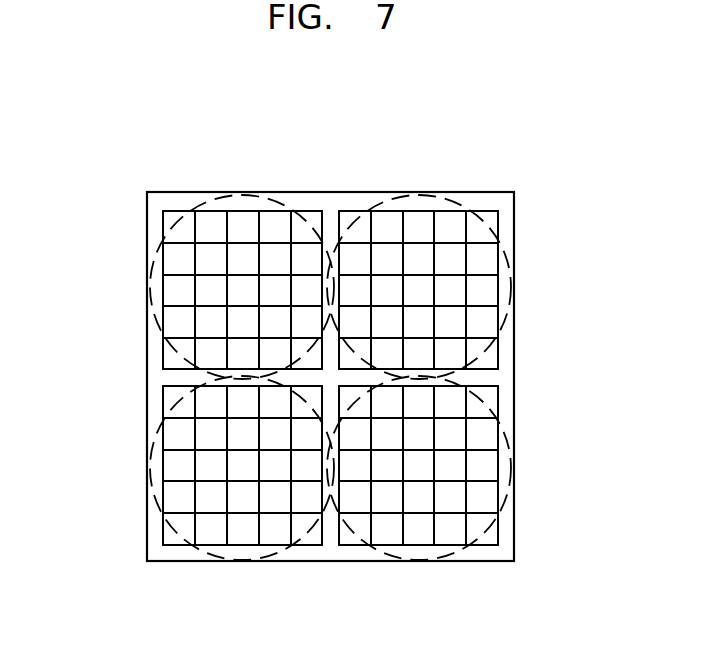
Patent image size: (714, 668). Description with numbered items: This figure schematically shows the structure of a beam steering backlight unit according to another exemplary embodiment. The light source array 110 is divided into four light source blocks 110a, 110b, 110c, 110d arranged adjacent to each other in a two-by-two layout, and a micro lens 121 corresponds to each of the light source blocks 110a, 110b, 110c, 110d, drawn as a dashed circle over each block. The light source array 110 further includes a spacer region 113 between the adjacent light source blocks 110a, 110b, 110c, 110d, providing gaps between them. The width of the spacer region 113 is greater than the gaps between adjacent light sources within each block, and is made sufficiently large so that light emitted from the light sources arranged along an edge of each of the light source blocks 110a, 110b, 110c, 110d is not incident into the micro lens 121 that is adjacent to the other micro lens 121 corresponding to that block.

The light source array 110 is at (334, 178).
The light source block 110a is at (166, 228).
The light source block 110b is at (492, 228).
The light source block 110c is at (494, 532).
The light source block 110d is at (166, 531).
The micro lens 121 is at (455, 200).
The spacer region 113 is at (330, 504).